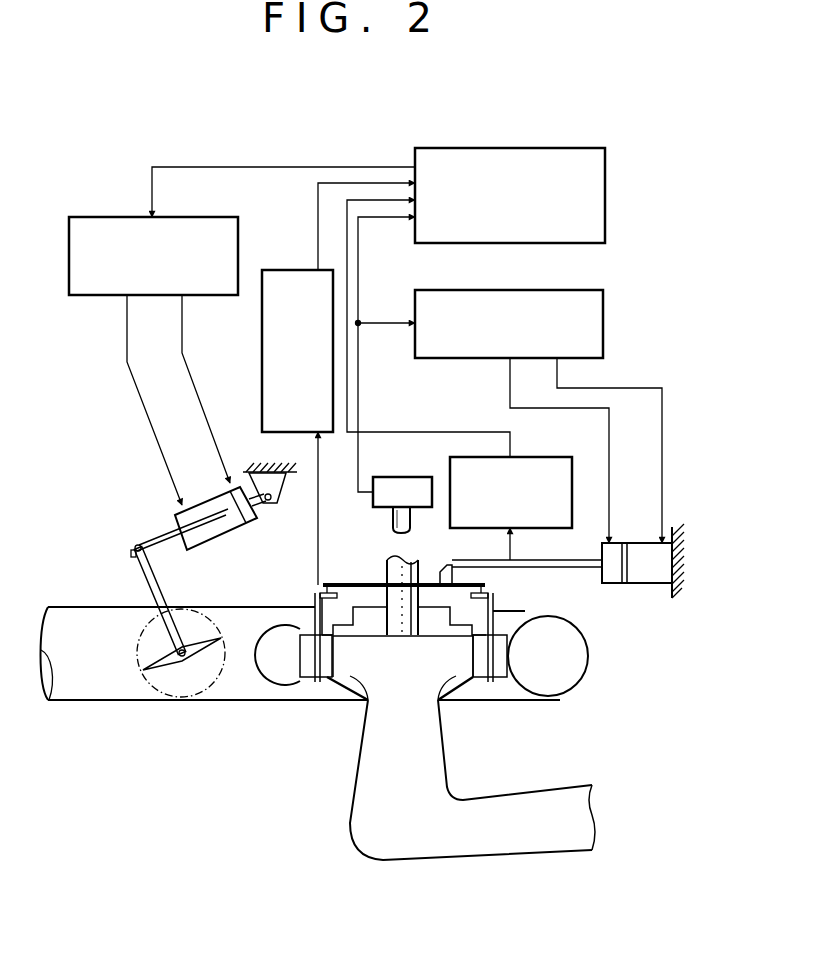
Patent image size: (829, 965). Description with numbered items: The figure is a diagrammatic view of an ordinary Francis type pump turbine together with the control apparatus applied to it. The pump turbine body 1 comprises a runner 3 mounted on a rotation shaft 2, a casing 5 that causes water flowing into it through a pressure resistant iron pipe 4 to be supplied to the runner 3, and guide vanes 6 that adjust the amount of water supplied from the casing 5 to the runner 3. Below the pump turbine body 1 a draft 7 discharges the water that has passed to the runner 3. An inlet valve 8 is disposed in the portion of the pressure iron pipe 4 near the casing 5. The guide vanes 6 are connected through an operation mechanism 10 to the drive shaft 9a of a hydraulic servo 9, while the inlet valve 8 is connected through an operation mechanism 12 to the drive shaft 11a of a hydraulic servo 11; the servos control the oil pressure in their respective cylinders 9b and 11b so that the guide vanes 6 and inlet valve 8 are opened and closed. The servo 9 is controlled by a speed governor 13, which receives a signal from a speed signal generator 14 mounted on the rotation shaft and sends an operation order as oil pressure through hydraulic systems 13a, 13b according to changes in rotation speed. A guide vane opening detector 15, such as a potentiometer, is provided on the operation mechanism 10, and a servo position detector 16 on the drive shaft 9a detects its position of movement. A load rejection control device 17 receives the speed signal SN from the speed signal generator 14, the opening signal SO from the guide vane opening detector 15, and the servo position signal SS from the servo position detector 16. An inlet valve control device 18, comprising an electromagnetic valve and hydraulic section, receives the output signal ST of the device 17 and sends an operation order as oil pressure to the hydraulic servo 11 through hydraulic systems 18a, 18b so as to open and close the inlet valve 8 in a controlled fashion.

The pump turbine body 1 is at (452, 708).
The rotation shaft 2 is at (409, 575).
The runner 3 is at (358, 680).
The pressure resistant iron pipe 4 is at (84, 692).
The casing 5 is at (560, 692).
The guide vanes 6 is at (307, 670).
The draft 7 is at (350, 823).
The inlet valve 8 is at (165, 670).
The hydraulic servo 9 is at (645, 583).
The drive shaft 9a is at (543, 563).
The cylinder 9b is at (638, 542).
The operation mechanism 10 is at (357, 583).
The hydraulic servo 11 is at (217, 528).
The drive shaft 11a is at (170, 543).
The cylinder 11b is at (215, 503).
The operation mechanism 12 is at (152, 595).
The speed governor 13 is at (430, 360).
The hydraulic system 13a is at (560, 380).
The hydraulic system 13b is at (510, 402).
The speed signal generator 14 is at (414, 477).
The guide vane opening detector 15 is at (282, 268).
The servo position detector 16 is at (560, 458).
The load rejection control device 17 is at (570, 148).
The inlet valve control device 18 is at (87, 296).
The hydraulic system 18a is at (182, 330).
The hydraulic system 18b is at (127, 322).
The output signal ST is at (205, 167).
The guide vane opening signal SO is at (318, 206).
The rotation speed signal SN is at (348, 250).
The servo position signal SS is at (347, 290).